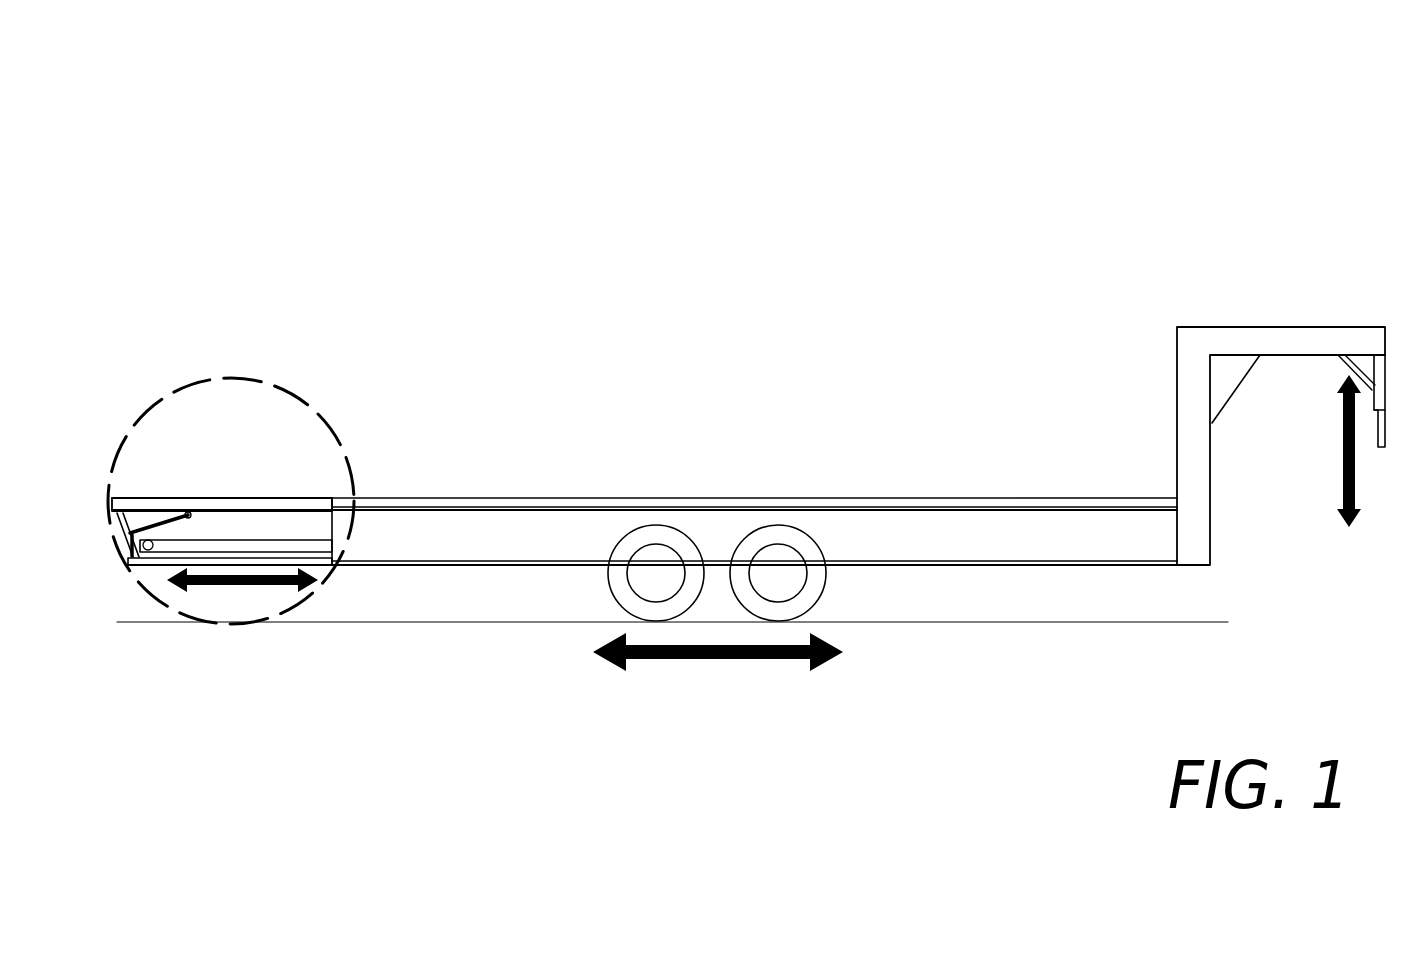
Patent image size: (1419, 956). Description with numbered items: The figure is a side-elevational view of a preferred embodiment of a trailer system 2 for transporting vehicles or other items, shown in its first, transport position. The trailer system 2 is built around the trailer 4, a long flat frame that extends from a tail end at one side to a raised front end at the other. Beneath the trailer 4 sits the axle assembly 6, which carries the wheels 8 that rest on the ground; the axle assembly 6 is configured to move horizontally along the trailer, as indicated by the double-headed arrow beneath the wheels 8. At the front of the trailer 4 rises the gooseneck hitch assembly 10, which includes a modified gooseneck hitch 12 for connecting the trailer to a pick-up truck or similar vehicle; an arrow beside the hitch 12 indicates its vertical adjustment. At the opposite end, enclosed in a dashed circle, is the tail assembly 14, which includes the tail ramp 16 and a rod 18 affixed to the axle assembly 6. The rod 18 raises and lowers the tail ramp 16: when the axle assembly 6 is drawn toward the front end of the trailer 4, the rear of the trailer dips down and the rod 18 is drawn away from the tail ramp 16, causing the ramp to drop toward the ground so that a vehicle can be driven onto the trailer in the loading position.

The trailer system 2 is at (1168, 115).
The trailer 4 is at (898, 482).
The axle assembly 6 is at (840, 574).
The wheels 8 is at (746, 533).
The gooseneck hitch assembly 10 is at (1288, 313).
The modified gooseneck hitch 12 is at (1383, 455).
The tail assembly 14 is at (222, 482).
The tail ramp 16 is at (258, 498).
The rod 18 is at (248, 541).